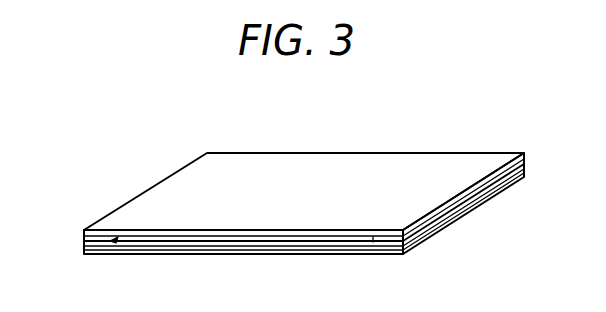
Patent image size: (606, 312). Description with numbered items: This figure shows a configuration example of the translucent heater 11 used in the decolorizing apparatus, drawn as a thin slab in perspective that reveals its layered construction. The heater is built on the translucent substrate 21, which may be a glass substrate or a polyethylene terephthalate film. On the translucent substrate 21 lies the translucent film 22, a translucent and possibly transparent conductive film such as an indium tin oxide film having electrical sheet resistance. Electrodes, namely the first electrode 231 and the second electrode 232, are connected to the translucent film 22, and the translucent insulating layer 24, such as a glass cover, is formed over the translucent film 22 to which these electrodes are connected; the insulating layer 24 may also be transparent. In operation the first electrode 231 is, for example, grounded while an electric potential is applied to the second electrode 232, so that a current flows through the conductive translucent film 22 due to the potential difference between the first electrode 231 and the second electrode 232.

The translucent heater 11 is at (297, 184).
The translucent substrate 21 is at (491, 218).
The translucent film 22 is at (465, 205).
The insulating layer 24 is at (383, 161).
The first electrode 231 is at (404, 246).
The second electrode 232 is at (85, 240).